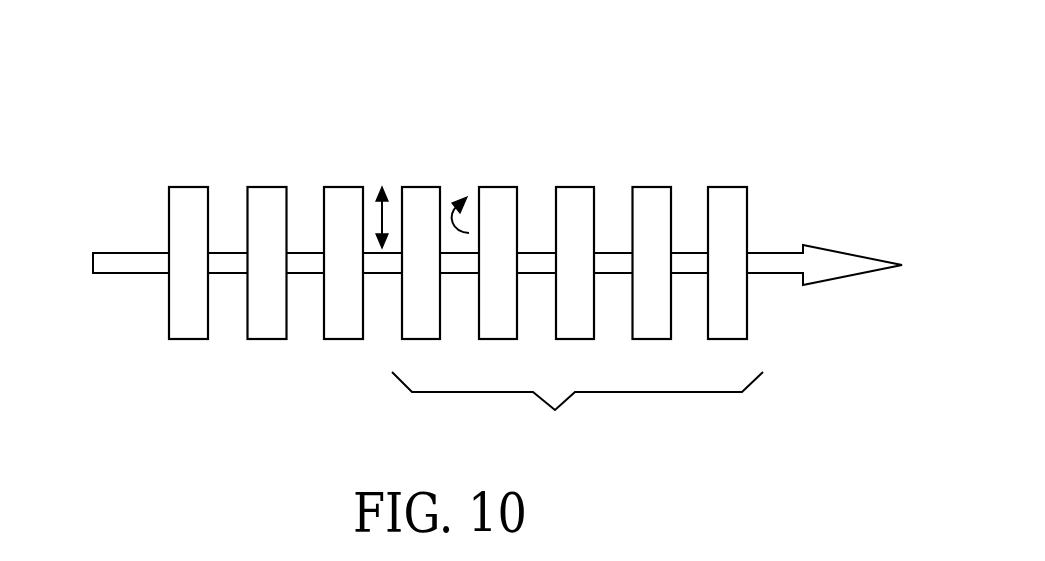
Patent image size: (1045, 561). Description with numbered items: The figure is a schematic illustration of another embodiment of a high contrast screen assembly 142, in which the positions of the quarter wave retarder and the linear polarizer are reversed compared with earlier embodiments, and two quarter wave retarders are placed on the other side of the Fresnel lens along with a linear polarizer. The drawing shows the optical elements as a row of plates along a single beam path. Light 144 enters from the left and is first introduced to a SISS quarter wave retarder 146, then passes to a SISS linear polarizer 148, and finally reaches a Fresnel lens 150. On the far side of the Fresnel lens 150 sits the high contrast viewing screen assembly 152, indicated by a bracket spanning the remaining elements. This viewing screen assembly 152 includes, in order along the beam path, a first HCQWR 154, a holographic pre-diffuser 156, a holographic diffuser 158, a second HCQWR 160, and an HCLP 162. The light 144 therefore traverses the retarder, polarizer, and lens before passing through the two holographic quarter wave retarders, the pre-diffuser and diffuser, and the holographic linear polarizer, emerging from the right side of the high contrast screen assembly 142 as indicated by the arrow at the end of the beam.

The high contrast screen assembly 142 is at (853, 361).
The light 144 is at (123, 262).
The SISS quarter wave retarder 146 is at (187, 195).
The SISS linear polarizer 148 is at (265, 193).
The Fresnel lens 150 is at (342, 193).
The high contrast viewing screen assembly 152 is at (577, 408).
The first HCQWR 154 is at (422, 193).
The holographic pre-diffuser 156 is at (498, 193).
The holographic diffuser 158 is at (577, 193).
The second HCQWR 160 is at (652, 193).
The HCLP 162 is at (725, 193).